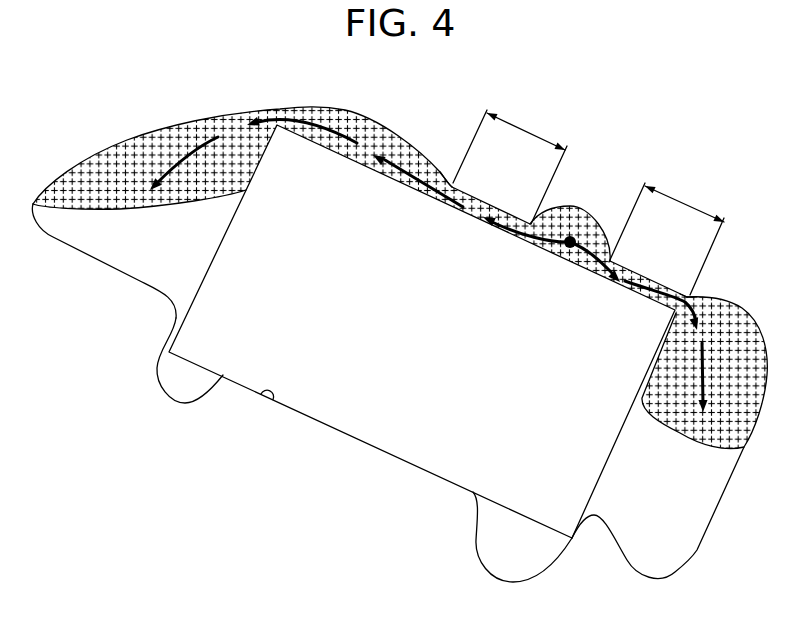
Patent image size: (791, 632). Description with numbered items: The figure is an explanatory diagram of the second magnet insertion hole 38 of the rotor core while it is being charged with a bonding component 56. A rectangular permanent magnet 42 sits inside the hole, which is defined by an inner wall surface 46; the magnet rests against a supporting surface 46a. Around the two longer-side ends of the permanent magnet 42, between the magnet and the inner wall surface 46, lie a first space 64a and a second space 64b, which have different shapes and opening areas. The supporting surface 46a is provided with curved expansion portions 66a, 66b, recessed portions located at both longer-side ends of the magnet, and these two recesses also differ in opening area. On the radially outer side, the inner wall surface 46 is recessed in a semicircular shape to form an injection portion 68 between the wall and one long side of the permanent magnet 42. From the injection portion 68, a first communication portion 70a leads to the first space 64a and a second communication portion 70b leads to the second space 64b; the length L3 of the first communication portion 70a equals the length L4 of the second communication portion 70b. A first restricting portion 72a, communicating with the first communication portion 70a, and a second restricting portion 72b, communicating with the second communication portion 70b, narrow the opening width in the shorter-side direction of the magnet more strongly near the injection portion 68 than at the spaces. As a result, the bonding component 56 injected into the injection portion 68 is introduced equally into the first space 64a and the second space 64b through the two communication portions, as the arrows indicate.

The second magnet insertion hole 38 is at (127, 138).
The permanent magnet 42 is at (413, 450).
The inner wall surface 46 is at (180, 137).
The supporting surface 46a is at (267, 400).
The bonding component 56 is at (733, 322).
The first space 64a is at (630, 523).
The second space 64b is at (90, 240).
The curved expansion portion 66a is at (528, 565).
The curved expansion portion 66b is at (183, 392).
The injection portion 68 is at (610, 258).
The first communication portion 70a is at (637, 285).
The second communication portion 70b is at (477, 208).
The first restricting portion 72a is at (688, 297).
The second restricting portion 72b is at (452, 188).
The length of the first communication portion L3 is at (666, 235).
The length of the second communication portion L4 is at (510, 161).